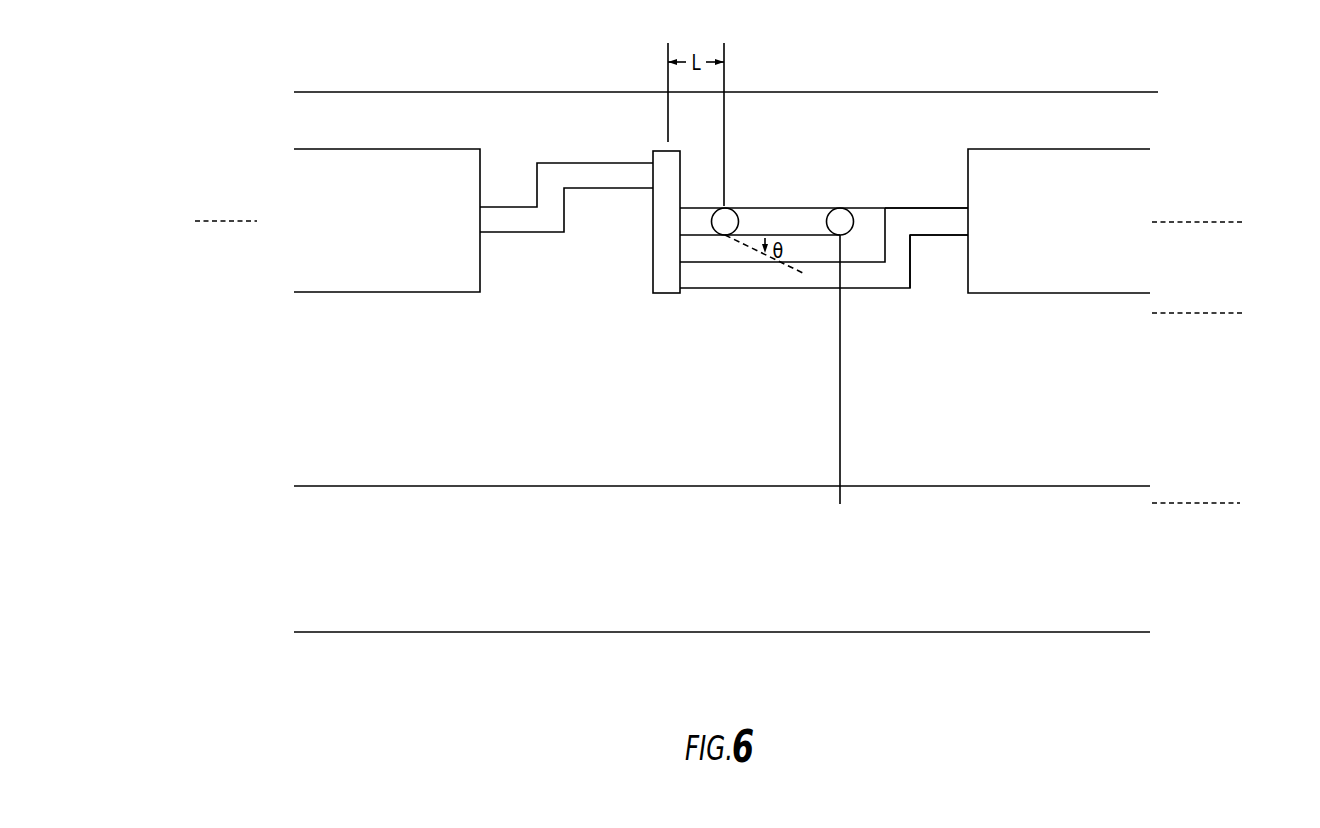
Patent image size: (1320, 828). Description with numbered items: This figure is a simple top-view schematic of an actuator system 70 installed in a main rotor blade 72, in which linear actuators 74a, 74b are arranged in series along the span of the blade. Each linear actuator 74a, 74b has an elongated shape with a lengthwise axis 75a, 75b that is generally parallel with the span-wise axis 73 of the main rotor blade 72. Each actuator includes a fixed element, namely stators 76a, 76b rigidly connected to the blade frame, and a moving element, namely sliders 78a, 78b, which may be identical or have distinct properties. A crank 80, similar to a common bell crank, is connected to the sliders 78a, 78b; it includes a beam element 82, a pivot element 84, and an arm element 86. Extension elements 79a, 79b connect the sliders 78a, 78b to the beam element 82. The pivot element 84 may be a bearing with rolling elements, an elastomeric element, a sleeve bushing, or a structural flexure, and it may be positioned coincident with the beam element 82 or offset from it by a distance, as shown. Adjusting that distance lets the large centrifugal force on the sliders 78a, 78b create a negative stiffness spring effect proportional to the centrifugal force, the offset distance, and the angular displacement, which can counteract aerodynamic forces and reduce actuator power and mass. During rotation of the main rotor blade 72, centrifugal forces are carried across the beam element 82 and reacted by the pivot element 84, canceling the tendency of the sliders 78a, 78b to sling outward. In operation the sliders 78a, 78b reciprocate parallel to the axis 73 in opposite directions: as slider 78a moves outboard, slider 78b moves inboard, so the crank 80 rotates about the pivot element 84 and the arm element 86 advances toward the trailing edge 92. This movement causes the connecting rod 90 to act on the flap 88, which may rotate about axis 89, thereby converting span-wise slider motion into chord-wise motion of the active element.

The actuator system 70 is at (739, 275).
The main rotor blade 72 is at (1082, 105).
The span-wise axis 73 is at (1213, 314).
The linear actuator 74a is at (467, 236).
The linear actuator 74b is at (1041, 239).
The lengthwise axis 75a is at (206, 222).
The lengthwise axis 75b is at (1218, 223).
The stator 76a is at (367, 175).
The stator 76b is at (1105, 175).
The slider 78a is at (520, 223).
The slider 78b is at (923, 220).
The extension element 79a is at (610, 172).
The extension element 79b is at (733, 277).
The crank 80 is at (824, 176).
The beam element 82 is at (658, 250).
The pivot element 84 is at (727, 207).
The arm element 86 is at (780, 222).
The flap 88 is at (447, 612).
The axis 89 is at (783, 501).
The connecting rod 90 is at (840, 363).
The trailing edge 92 is at (792, 632).